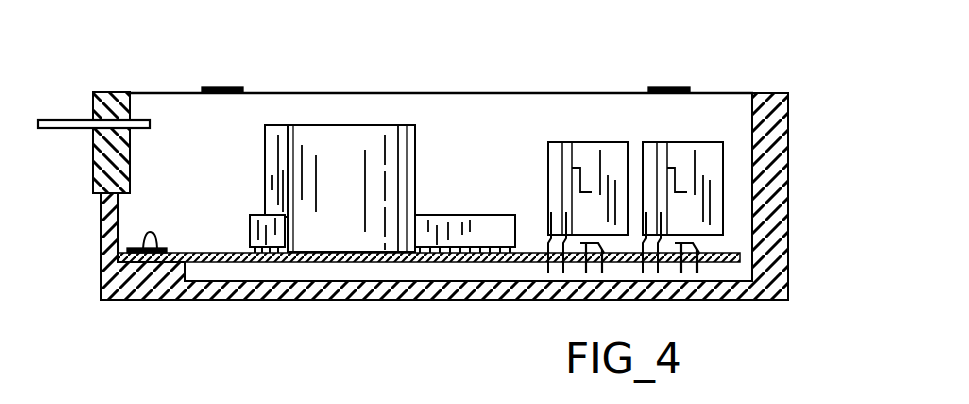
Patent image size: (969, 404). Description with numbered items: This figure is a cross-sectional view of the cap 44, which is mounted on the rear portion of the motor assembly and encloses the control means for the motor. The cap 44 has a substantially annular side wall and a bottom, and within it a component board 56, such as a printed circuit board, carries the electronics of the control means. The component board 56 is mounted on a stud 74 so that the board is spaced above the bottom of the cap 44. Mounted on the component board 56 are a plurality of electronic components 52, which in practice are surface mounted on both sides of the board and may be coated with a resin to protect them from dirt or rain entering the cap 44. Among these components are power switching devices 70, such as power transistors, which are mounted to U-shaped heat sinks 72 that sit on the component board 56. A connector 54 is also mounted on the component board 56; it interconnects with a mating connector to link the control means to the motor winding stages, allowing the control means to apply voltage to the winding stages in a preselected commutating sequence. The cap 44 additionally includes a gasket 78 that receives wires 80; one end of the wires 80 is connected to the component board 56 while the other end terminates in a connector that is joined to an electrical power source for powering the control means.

The cap 44 is at (806, 125).
The electronic components 52 is at (288, 163).
The connector 54 is at (485, 215).
The component board 56 is at (224, 253).
The power switching devices 70 is at (592, 232).
The U-shaped heat sinks 72 is at (572, 170).
The studs 74 is at (150, 233).
The gasket 78 is at (93, 181).
The wires 80 is at (70, 119).